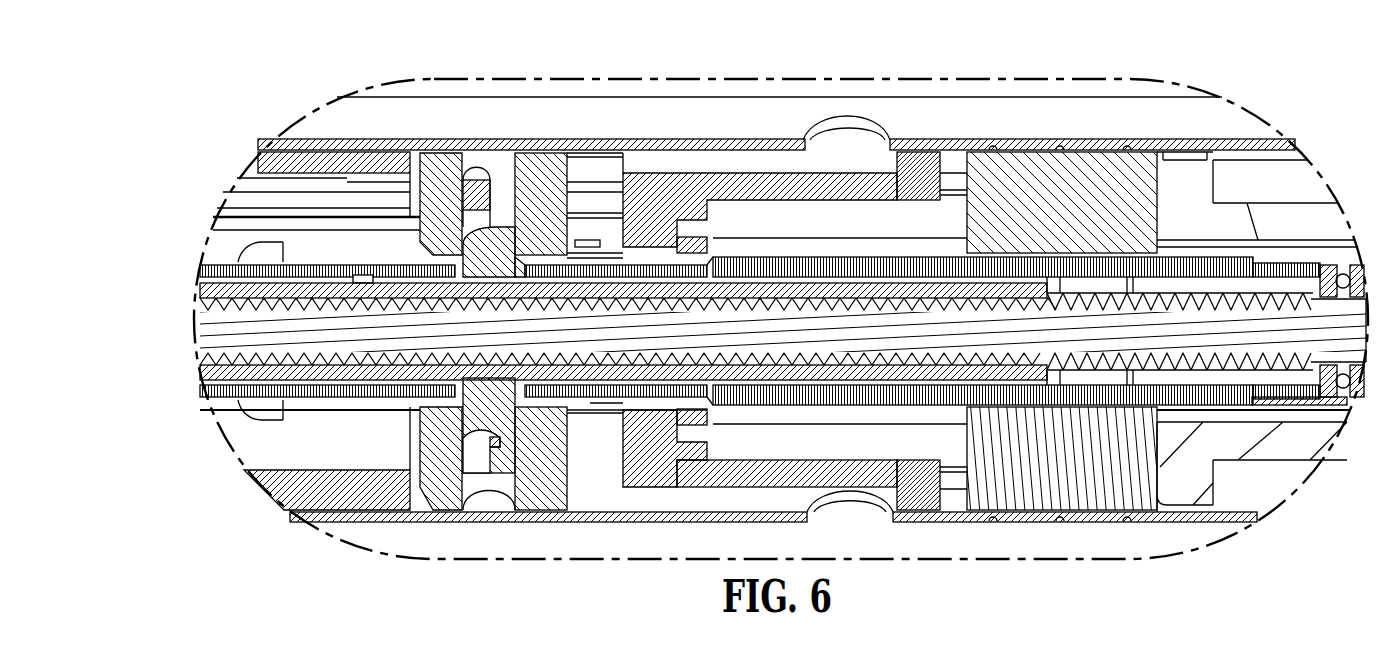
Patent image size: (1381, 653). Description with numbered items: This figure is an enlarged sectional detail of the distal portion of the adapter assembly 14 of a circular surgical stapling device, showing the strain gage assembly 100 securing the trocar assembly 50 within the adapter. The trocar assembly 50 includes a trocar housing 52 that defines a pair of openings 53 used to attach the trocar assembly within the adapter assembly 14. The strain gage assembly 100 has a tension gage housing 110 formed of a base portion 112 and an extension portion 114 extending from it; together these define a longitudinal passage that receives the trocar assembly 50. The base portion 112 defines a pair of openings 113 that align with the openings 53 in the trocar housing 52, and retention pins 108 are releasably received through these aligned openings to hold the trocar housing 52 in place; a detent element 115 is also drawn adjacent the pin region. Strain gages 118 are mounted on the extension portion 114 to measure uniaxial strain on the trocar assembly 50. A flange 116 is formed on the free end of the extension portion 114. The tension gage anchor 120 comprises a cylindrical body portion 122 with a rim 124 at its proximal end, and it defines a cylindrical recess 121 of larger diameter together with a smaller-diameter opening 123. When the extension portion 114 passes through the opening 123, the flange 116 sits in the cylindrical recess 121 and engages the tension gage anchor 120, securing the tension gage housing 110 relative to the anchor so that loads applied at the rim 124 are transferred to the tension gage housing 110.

The adapter assembly 14 is at (781, 279).
The trocar assembly 50 is at (783, 410).
The trocar housing 52 is at (313, 253).
The openings 53 is at (468, 162).
The strain gage assembly 100 is at (779, 51).
The retention pins 108 is at (497, 230).
The tension gage housing 110 is at (776, 368).
The base portion 112 is at (508, 185).
The openings 113 is at (475, 483).
The extension portion 114 is at (596, 412).
The ball 115 is at (500, 163).
The flange 116 is at (700, 405).
The strain gages 118 is at (530, 195).
The tension gage anchor 120 is at (848, 272).
The cylindrical recess 121 is at (740, 450).
The cylindrical body portion 122 is at (752, 187).
The opening 123 is at (630, 420).
The rim 124 is at (918, 163).